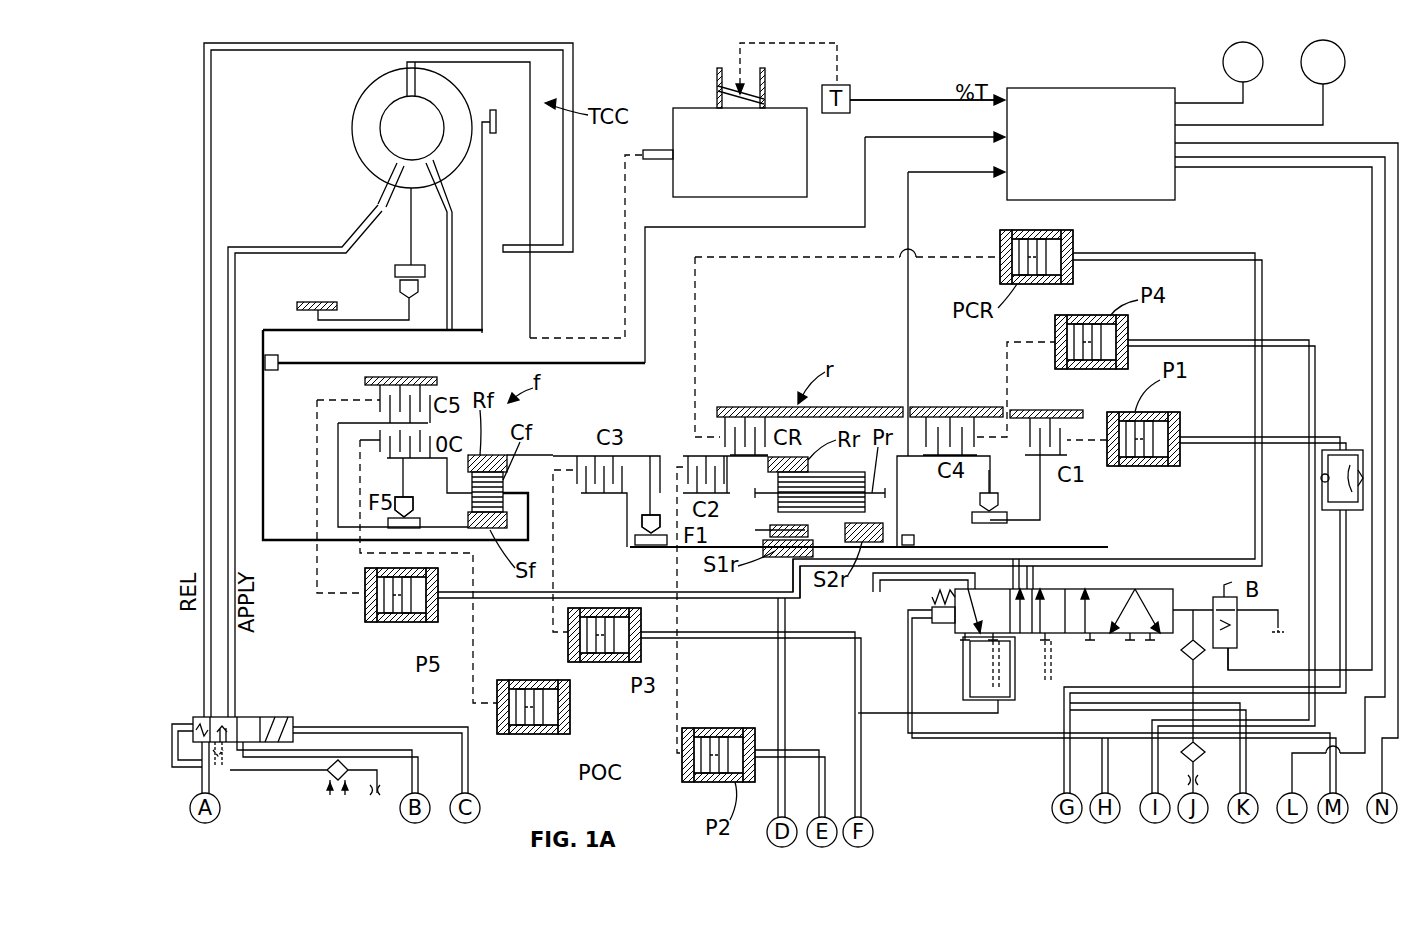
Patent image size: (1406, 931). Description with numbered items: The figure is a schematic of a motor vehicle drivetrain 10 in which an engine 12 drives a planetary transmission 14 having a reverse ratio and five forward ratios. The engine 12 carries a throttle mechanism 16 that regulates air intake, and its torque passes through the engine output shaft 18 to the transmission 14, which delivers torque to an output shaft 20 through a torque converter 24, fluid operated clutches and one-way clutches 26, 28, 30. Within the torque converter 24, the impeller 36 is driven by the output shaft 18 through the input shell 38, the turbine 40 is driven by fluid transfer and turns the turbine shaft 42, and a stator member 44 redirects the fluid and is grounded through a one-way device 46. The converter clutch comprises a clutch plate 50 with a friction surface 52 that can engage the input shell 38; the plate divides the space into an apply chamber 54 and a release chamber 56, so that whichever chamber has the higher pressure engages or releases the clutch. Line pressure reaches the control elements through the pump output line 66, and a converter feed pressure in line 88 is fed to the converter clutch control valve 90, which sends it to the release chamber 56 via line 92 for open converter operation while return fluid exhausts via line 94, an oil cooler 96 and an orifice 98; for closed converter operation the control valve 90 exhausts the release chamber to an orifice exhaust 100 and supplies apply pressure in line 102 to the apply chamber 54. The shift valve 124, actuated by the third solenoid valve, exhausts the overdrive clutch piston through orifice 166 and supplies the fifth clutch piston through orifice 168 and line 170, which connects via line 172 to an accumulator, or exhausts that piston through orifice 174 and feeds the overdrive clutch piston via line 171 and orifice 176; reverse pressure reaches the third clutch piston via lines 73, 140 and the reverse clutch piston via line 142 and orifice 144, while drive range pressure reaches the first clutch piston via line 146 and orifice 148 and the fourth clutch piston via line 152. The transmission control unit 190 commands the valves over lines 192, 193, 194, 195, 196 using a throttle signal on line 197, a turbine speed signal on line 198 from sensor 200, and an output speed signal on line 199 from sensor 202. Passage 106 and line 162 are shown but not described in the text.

The motor vehicle drivetrain 10 is at (878, 80).
The engine 12 is at (673, 130).
The planetary transmission 14 is at (704, 391).
The throttle mechanism 16 is at (718, 90).
The engine output shaft 18 is at (657, 160).
The output shaft 20 is at (1097, 546).
The torque converter 24 is at (435, 200).
The one-way clutch 26 is at (395, 530).
The one-way clutch 28 is at (650, 547).
The one-way clutch 30 is at (978, 515).
The impeller 36 is at (363, 157).
The input shell 38 is at (532, 80).
The turbine 40 is at (447, 110).
The turbine shaft 42 is at (283, 330).
The stator member 44 is at (395, 187).
The one-way device 46 is at (400, 290).
The clutch plate 50 is at (483, 178).
The friction surface 52 is at (497, 128).
The apply chamber 54 is at (455, 222).
The release chamber 56 is at (505, 172).
The pump output line 66 is at (1246, 740).
The line 73 is at (866, 787).
The converter feed line 88 is at (200, 775).
The TCC Control Valve 90 is at (250, 716).
The release line 92 is at (206, 552).
The return line 94 is at (236, 540).
The oil cooler 96 is at (330, 782).
The orifice 98 is at (380, 797).
The orifice exhaust 100 is at (222, 765).
The TCC apply line 102 is at (377, 750).
The fluid passage 106 is at (468, 760).
The Shift Valve 124 is at (1165, 589).
The line 140 is at (840, 640).
The line 142 is at (998, 720).
The orifice 144 is at (1000, 646).
The line 146 is at (1062, 775).
The orifice 148 is at (1348, 462).
The line 152 is at (1152, 757).
The fluid passage 162 is at (808, 751).
The orifice 166 is at (1000, 646).
The orifice 168 is at (968, 645).
The line 170 is at (858, 598).
The line 171 is at (793, 575).
The line 172 is at (780, 665).
The orifice 174 is at (968, 660).
The orifice 176 is at (1055, 672).
The Transmission Control Unit 190 is at (1128, 200).
The control line 192 is at (1330, 143).
The control line 193 is at (1317, 167).
The control line 194 is at (1278, 157).
The control line 195 is at (1272, 125).
The control line 196 is at (1200, 103).
The throttle signal line 197 is at (927, 100).
The turbine speed signal line 198 is at (865, 180).
The output speed signal line 199 is at (937, 175).
The turbine speed sensor 200 is at (271, 372).
The output speed sensor 202 is at (914, 540).